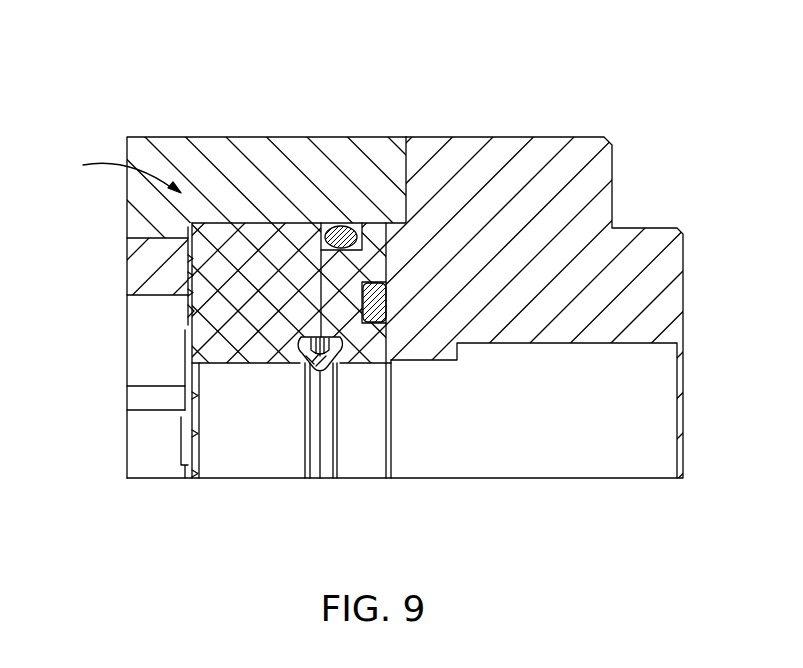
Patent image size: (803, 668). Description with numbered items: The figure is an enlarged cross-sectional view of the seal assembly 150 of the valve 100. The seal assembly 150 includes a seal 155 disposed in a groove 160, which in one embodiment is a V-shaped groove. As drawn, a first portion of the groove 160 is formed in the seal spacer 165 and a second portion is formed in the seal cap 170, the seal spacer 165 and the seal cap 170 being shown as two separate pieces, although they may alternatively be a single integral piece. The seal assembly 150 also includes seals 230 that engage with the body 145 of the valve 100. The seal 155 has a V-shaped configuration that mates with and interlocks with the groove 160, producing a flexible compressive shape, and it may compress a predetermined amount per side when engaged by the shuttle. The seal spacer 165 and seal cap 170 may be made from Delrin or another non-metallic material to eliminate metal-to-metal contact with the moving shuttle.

The valve 100 is at (680, 36).
The body 145 is at (268, 160).
The seal assembly 150 is at (111, 174).
The seal 155 is at (300, 352).
The groove 160 is at (338, 420).
The seal spacer 165 is at (380, 242).
The seal cap 170 is at (198, 334).
The seals 230 is at (357, 243).